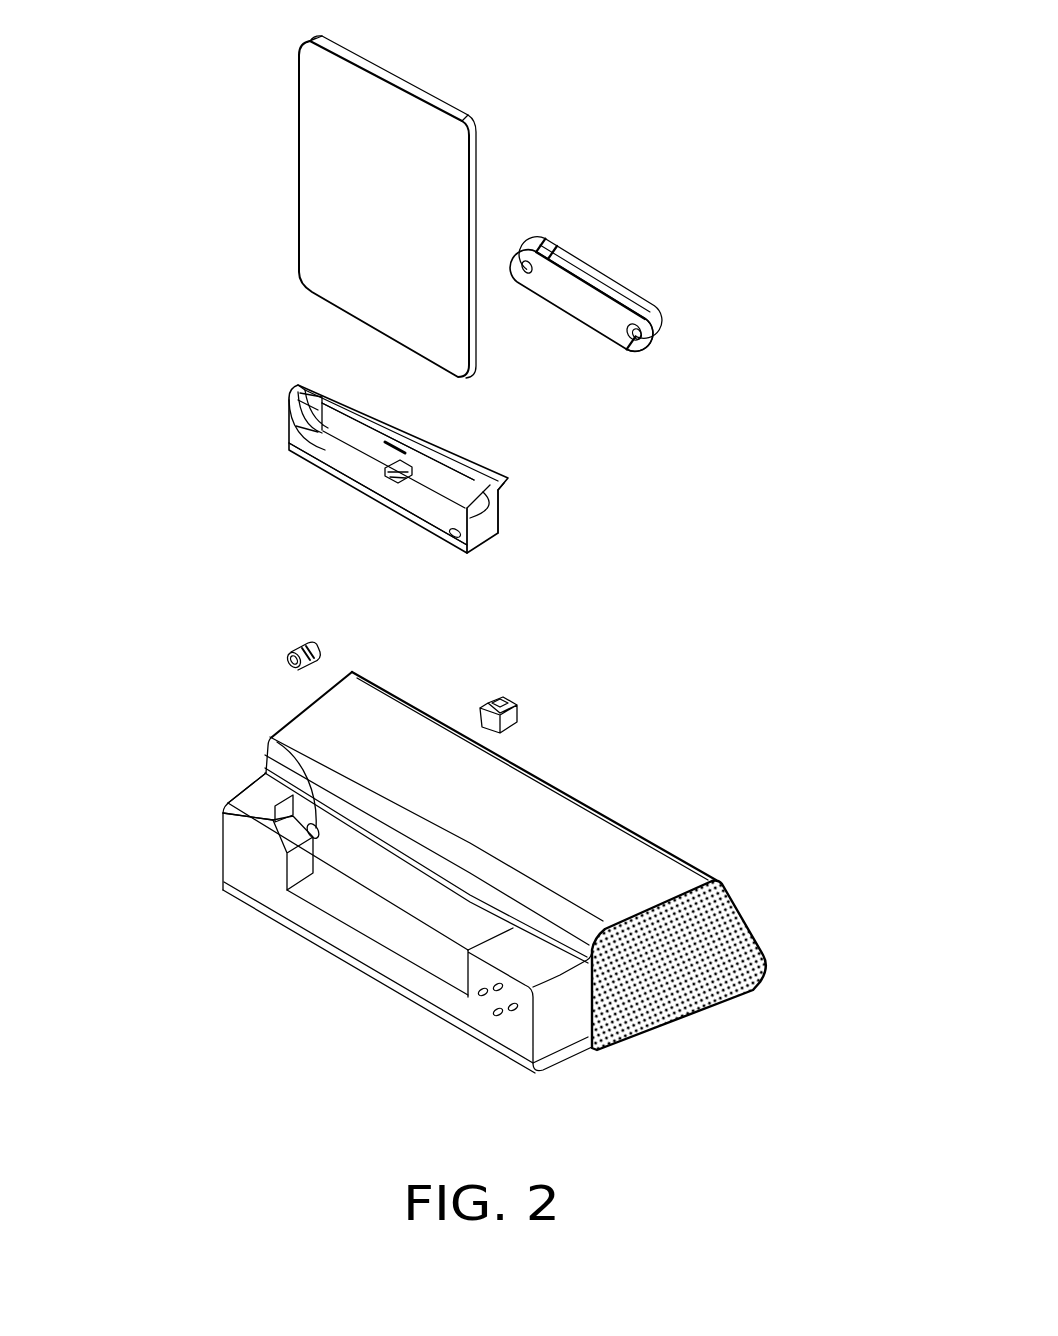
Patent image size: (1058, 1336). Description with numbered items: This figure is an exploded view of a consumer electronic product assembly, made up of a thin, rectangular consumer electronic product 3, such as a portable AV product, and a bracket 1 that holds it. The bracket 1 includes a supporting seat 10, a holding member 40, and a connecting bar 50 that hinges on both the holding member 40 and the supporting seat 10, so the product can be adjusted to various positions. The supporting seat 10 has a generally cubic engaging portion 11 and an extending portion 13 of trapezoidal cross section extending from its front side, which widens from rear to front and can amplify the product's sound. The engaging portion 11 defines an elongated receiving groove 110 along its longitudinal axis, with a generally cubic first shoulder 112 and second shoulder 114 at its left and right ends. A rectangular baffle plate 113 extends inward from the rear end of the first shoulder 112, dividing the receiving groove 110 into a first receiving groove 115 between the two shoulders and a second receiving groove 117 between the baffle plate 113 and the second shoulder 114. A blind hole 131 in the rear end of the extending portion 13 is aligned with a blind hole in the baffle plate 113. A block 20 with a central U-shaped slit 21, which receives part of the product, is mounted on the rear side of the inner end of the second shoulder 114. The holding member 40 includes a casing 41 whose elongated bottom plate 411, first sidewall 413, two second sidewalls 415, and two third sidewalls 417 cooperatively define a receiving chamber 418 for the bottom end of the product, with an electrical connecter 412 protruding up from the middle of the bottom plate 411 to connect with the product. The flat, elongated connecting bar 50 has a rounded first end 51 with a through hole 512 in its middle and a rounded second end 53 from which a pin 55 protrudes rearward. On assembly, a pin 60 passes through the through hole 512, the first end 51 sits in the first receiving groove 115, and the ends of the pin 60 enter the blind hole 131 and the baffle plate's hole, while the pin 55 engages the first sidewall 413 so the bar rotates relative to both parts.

The bracket 1 is at (795, 258).
The consumer electronic product 3 is at (402, 92).
The supporting seat 10 is at (426, 904).
The engaging portion 11 is at (565, 1037).
The extending portion 13 is at (658, 1018).
The block 20 is at (626, 681).
The U-shaped slit 21 is at (503, 697).
The holding member 40 is at (484, 488).
The casing 41 is at (348, 488).
The bottom plate 411 is at (413, 518).
The electrical connecter 412 is at (400, 463).
The first sidewall 413 is at (367, 443).
The second sidewall 415 is at (440, 549).
The third sidewall 417 is at (290, 435).
The receiving chamber 418 is at (308, 387).
The connecting bar 50 is at (653, 284).
The first end 51 is at (512, 258).
The through hole 512 is at (532, 265).
The second end 53 is at (652, 332).
The pin 55 is at (653, 338).
The pin 60 is at (287, 655).
The receiving groove 110 is at (335, 1061).
The first shoulder 112 is at (252, 797).
The baffle plate 113 is at (270, 833).
The second shoulder 114 is at (513, 948).
The first receiving groove 115 is at (390, 880).
The second receiving groove 117 is at (402, 942).
The blind hole 131 is at (285, 762).